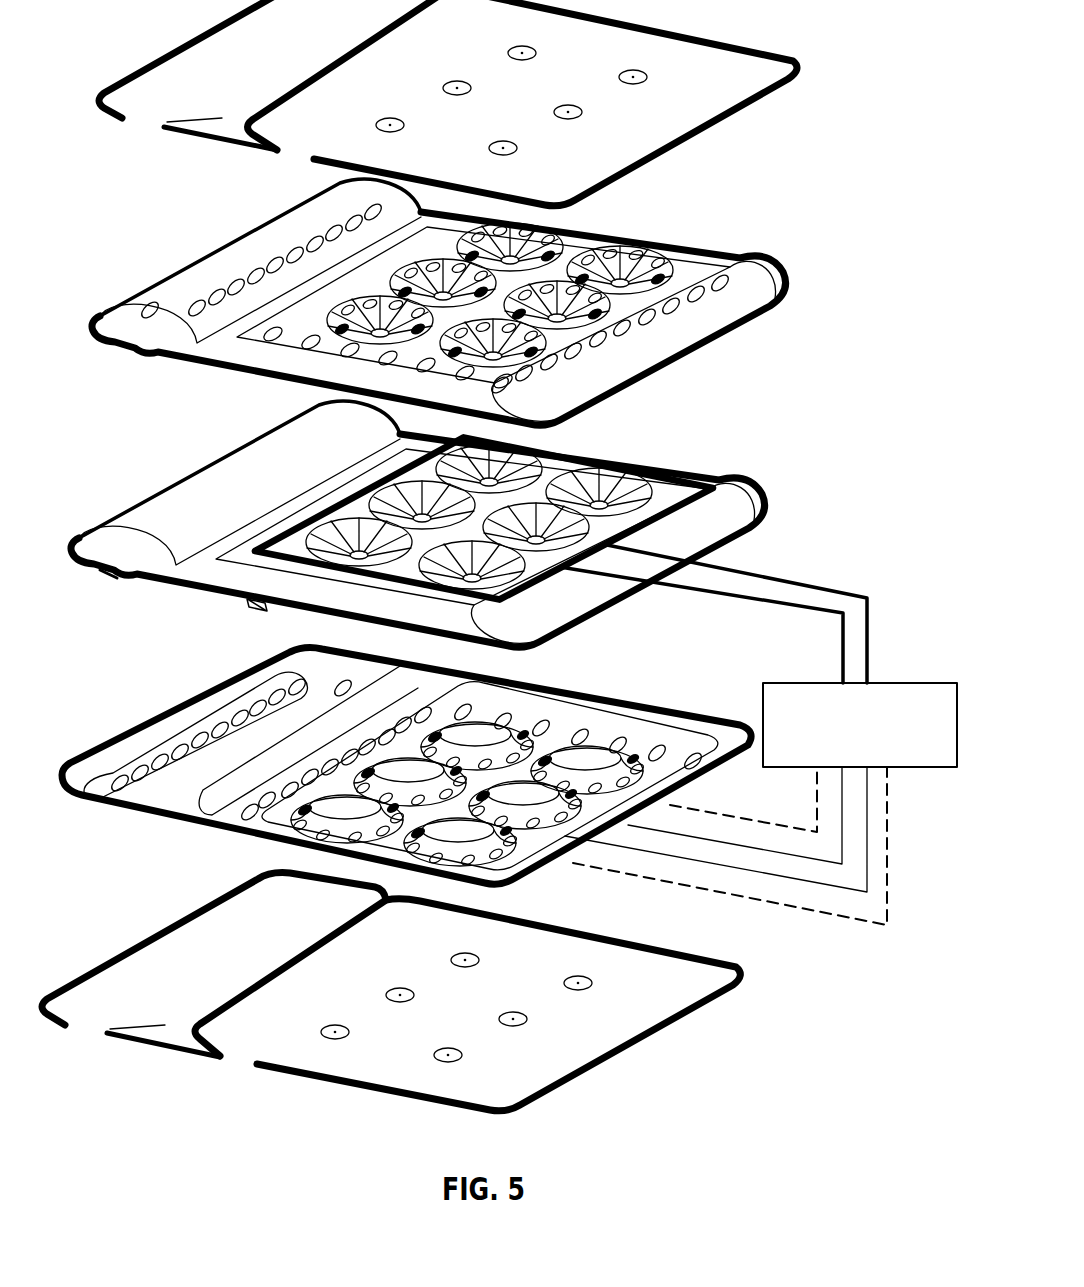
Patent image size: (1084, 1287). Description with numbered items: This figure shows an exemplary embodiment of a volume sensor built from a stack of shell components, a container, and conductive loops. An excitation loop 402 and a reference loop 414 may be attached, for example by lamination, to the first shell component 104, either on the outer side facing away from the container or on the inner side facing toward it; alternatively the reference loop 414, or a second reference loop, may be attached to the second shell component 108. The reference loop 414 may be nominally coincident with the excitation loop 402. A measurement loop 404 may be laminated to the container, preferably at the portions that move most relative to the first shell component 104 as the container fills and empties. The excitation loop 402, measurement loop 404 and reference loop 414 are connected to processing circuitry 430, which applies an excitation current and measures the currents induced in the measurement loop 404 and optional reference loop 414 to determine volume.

The first shell component 104 is at (406, 751).
The second shell component 108 is at (731, 277).
The excitation loop 402 is at (553, 737).
The measurement loop 404 is at (249, 603).
The reference loop 414 is at (643, 748).
The processing circuitry 430 is at (900, 683).